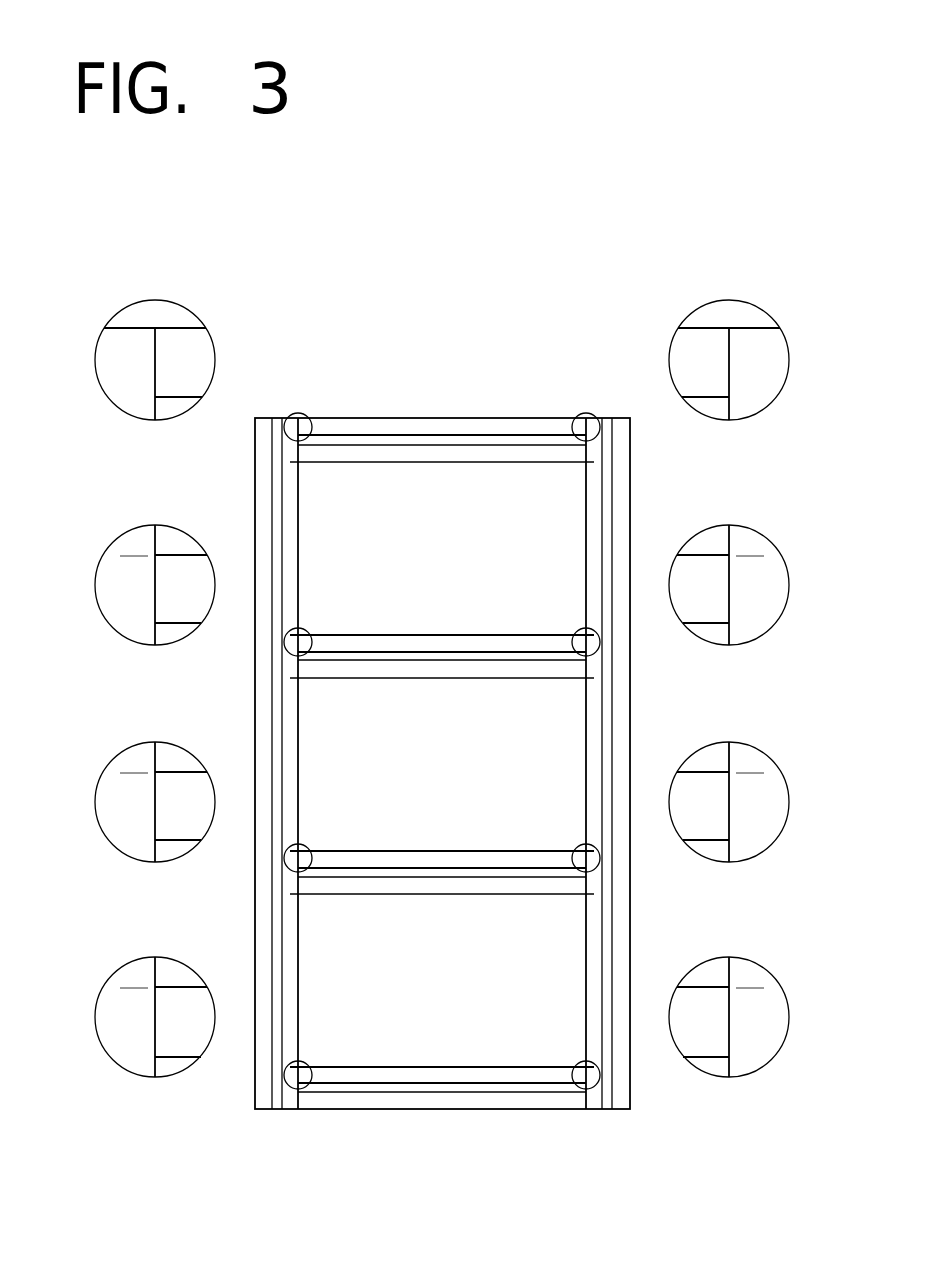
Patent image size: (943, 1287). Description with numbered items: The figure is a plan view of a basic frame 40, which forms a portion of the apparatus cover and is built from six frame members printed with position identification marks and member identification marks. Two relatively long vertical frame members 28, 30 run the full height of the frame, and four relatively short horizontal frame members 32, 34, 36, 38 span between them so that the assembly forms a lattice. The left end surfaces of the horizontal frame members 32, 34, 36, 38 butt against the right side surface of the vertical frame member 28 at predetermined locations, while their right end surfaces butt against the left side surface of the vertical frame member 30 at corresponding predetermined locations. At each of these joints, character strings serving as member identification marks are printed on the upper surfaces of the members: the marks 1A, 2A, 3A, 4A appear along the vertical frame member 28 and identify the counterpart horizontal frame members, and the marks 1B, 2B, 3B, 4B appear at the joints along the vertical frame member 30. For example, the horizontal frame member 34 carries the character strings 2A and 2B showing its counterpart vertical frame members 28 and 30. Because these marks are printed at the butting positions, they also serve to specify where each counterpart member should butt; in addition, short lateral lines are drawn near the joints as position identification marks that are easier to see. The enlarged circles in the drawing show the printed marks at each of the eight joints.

The basic frame 40 is at (310, 323).
The vertical frame member 28 is at (298, 547).
The vertical frame member 30 is at (586, 542).
The horizontal frame member 32 is at (478, 1065).
The horizontal frame member 34 is at (478, 849).
The horizontal frame member 36 is at (478, 633).
The horizontal frame member 38 is at (478, 417).
The member identification mark 1A is at (285, 1068).
The member identification mark 2A is at (285, 850).
The member identification mark 3A is at (285, 632).
The member identification mark 4A is at (288, 420).
The member identification mark 1B is at (598, 1065).
The member identification mark 2B is at (598, 848).
The member identification mark 3B is at (598, 632).
The member identification mark 4B is at (597, 417).